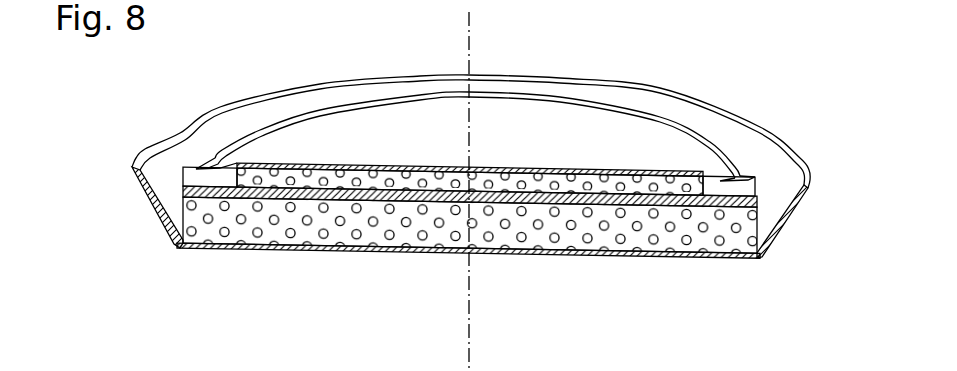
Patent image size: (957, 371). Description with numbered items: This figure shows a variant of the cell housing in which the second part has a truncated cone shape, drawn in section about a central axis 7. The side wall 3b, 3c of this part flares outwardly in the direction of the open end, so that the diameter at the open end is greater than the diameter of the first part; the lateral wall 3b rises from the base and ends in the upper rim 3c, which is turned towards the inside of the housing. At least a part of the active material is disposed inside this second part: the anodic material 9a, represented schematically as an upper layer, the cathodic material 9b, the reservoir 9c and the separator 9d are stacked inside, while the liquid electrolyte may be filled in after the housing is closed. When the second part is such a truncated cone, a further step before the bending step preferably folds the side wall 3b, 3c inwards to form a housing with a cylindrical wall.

The center axis 7 is at (470, 28).
The lateral wall 3b is at (768, 252).
The upper rim 3c is at (808, 188).
The anodic material 9a is at (598, 167).
The cathodic material 9b is at (307, 222).
The reservoir 9c is at (470, 249).
The separator 9d is at (418, 221).